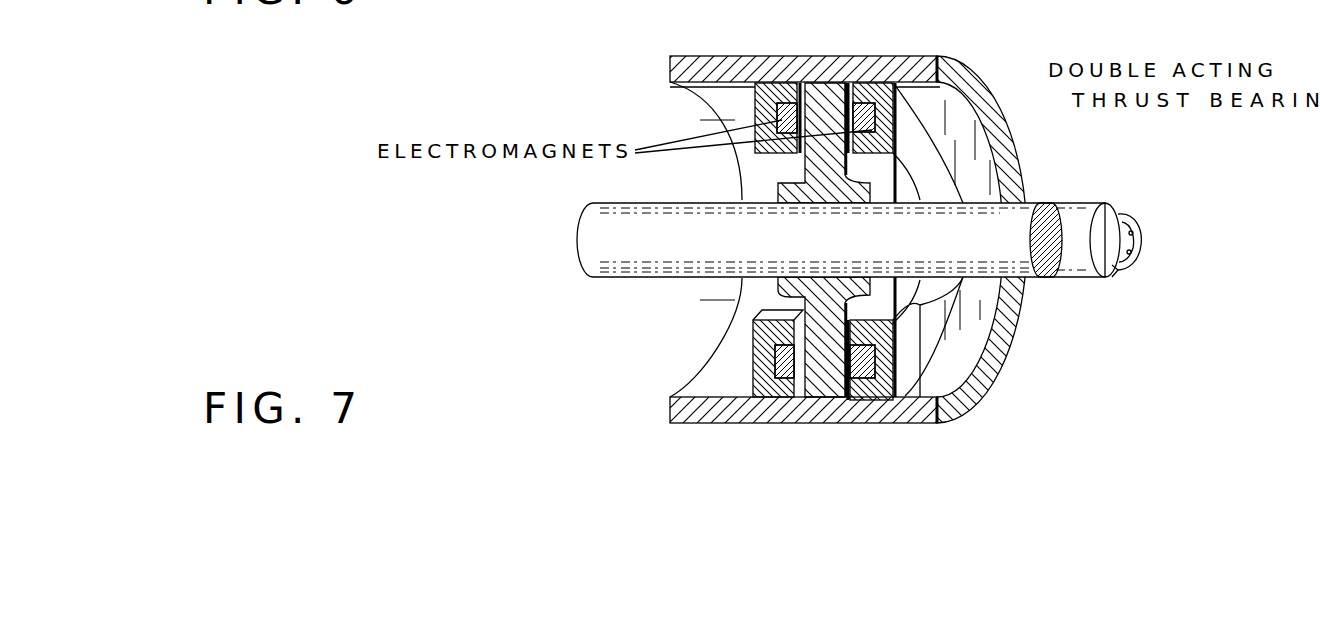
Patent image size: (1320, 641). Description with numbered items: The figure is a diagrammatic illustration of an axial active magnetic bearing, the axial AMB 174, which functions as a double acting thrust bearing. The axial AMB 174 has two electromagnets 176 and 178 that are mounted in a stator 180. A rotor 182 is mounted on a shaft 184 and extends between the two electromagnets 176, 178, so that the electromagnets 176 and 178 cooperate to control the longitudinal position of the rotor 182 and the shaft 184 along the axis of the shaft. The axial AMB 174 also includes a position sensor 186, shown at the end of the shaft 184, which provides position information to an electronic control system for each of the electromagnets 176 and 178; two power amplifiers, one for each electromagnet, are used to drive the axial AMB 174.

The axial AMB 174 is at (637, 97).
The electromagnet 176 is at (782, 103).
The electromagnet 178 is at (868, 103).
The stator 180 is at (907, 128).
The rotor 182 is at (818, 282).
The shaft 184 is at (577, 237).
The position sensor 186 is at (1112, 273).